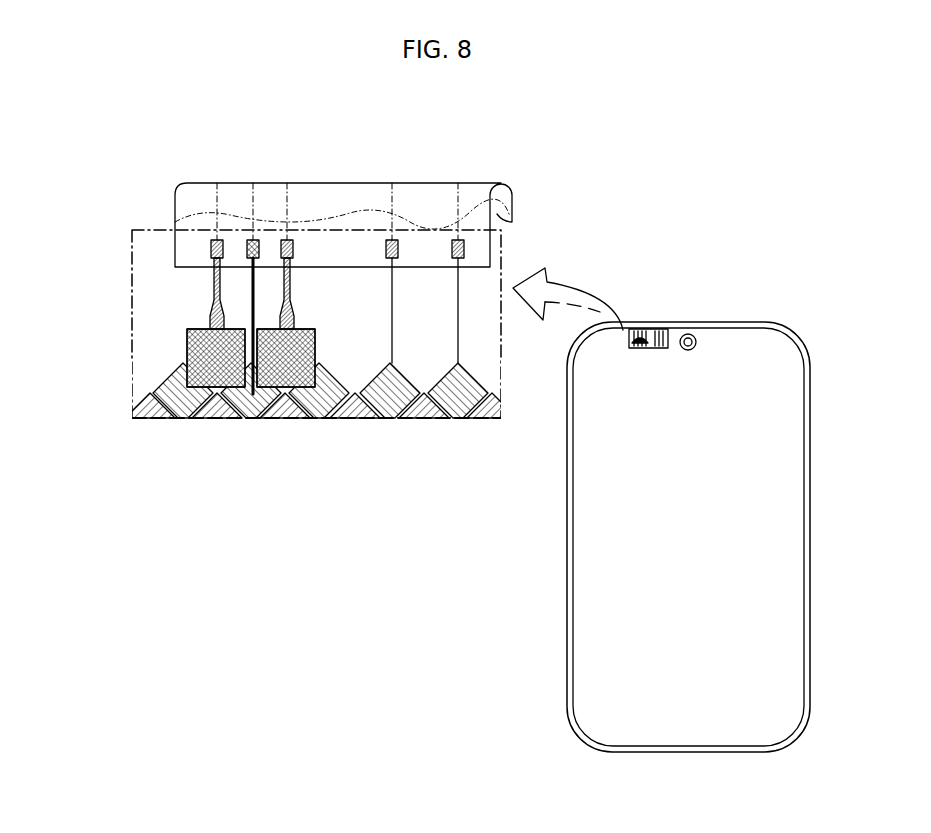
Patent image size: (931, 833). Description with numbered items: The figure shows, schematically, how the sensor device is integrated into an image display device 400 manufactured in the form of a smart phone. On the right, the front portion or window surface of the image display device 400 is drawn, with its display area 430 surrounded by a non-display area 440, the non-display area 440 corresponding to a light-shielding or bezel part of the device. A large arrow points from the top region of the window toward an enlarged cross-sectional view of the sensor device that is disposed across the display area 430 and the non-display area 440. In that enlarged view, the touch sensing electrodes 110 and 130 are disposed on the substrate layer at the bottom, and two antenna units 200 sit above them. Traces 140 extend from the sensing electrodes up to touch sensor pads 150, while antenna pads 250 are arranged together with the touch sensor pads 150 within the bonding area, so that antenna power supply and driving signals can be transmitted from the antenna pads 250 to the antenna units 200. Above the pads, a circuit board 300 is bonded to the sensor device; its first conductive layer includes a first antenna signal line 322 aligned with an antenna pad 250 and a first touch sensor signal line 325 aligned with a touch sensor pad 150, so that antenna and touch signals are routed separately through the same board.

The touch sensing electrode 110 is at (165, 395).
The touch sensing electrode 130 is at (428, 418).
The trace 140 is at (458, 337).
The touch sensor pad 150 is at (392, 248).
The antenna unit 200 is at (182, 336).
The antenna pad 250 is at (293, 249).
The circuit board 300 is at (170, 222).
The first antenna signal line 322 is at (217, 188).
The first touch sensor signal line 325 is at (459, 188).
The image display device 400 is at (608, 272).
The display area 430 is at (617, 587).
The non-display area 440 is at (567, 633).